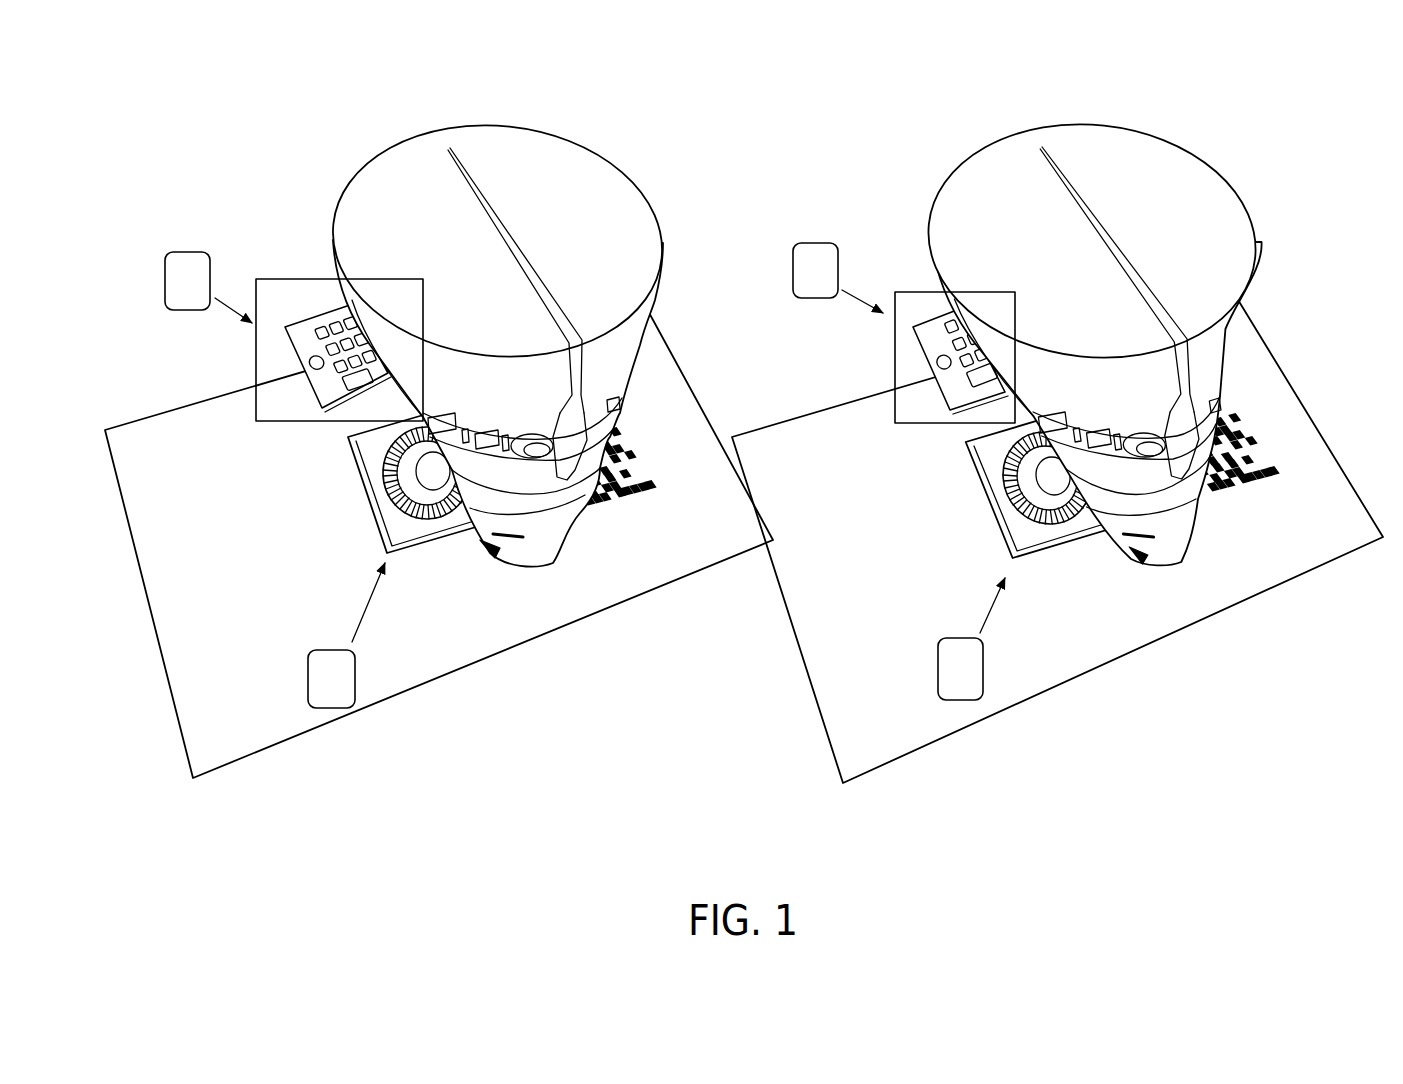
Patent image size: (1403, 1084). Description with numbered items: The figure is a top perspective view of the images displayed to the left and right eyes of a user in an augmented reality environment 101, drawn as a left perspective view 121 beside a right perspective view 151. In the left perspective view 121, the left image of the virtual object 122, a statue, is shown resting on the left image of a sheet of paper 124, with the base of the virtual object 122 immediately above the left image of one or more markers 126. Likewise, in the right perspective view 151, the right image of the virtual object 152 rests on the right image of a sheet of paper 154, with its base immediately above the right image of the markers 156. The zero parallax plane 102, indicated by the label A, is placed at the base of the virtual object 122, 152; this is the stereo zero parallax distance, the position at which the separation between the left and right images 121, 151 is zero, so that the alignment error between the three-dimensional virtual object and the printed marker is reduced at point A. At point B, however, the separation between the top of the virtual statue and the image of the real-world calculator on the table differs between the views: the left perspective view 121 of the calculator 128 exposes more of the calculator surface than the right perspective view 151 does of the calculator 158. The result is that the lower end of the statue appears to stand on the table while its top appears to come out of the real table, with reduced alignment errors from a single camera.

The augmented reality environment 101 is at (262, 118).
The zero parallax plane 102 is at (387, 552).
The left perspective view 121 is at (392, 752).
The virtual object 122 is at (552, 152).
The sheet of paper 124 is at (540, 637).
The markers 126 is at (627, 510).
The calculator 128 is at (317, 317).
The right perspective view 151 is at (1050, 767).
The virtual object 152 is at (1143, 155).
The sheet of paper 154 is at (1198, 622).
The markers 156 is at (1252, 505).
The calculator 158 is at (930, 313).